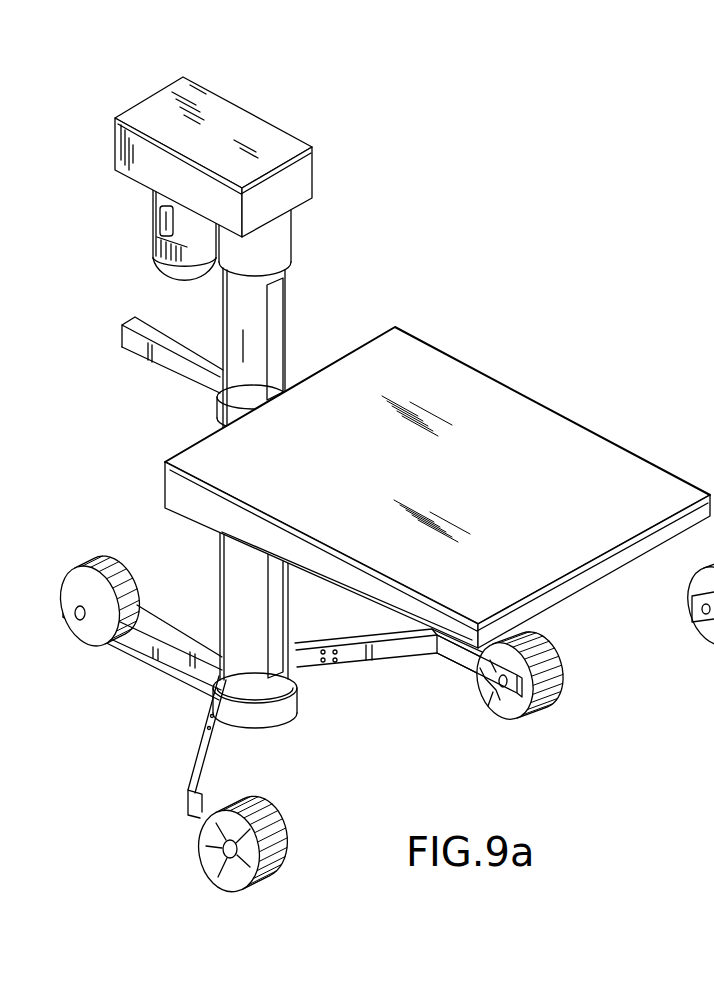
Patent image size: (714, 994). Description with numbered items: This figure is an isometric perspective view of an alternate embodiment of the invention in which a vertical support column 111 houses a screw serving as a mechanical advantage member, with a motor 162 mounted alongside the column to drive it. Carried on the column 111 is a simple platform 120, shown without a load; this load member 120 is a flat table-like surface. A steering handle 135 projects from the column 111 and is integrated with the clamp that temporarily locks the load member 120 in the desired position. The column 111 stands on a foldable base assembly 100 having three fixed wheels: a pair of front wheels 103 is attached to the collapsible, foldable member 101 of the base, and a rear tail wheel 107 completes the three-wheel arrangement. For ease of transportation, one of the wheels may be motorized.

The foldable base assembly 100 is at (128, 653).
The collapsible, foldable member 101 is at (207, 763).
The front wheels 103 is at (546, 677).
The rear tail wheel 107 is at (98, 558).
The vertical support column 111 is at (288, 288).
The platform 120 is at (628, 450).
The steering handle 135 is at (168, 362).
The motor 162 is at (170, 272).